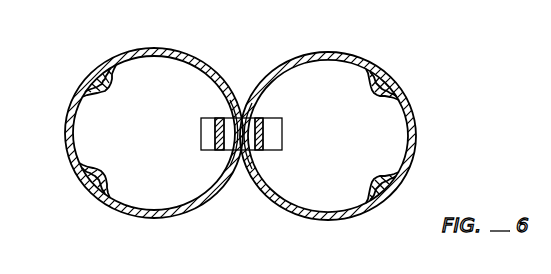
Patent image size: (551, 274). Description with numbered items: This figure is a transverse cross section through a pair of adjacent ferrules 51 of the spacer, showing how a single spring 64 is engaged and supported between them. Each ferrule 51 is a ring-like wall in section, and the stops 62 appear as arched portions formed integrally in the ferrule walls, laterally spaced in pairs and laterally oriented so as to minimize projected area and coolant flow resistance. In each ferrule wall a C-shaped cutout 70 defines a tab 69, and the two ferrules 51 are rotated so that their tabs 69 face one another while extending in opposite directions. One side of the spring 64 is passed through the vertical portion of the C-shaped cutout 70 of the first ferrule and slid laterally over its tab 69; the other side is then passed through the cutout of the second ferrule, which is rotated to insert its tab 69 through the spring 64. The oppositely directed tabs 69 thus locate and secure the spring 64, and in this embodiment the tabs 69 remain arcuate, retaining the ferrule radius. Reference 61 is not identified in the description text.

The ferrule 51 is at (416, 137).
The coupling 61 is at (201, 135).
The stops 62 is at (107, 90).
The spring 64 is at (208, 117).
The tabs 69 is at (253, 107).
The C-shaped cutout 70 is at (264, 75).